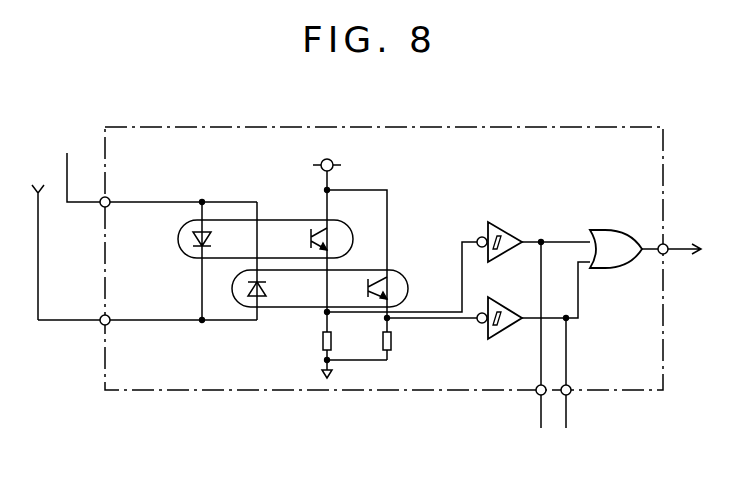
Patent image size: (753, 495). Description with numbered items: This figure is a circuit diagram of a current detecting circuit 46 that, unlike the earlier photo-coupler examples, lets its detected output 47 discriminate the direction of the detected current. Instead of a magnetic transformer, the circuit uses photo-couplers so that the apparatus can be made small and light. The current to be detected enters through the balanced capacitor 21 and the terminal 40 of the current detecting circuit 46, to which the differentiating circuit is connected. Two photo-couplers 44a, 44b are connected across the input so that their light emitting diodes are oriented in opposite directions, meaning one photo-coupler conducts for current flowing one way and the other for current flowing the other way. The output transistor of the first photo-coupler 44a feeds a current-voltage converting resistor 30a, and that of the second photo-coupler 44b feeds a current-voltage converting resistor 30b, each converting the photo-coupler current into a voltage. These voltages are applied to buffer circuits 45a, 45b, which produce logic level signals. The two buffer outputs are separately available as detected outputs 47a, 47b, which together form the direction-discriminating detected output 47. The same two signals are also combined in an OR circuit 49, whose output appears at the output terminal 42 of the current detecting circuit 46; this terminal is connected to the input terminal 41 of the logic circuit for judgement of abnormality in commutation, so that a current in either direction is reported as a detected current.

The balanced capacitor 21 is at (32, 241).
The terminal of the current detecting circuit 40 is at (103, 207).
The photo-coupler 44a is at (283, 218).
The photo-coupler 44b is at (285, 308).
The current-voltage converting resistor 30a is at (320, 342).
The current-voltage converting resistor 30b is at (393, 342).
The buffer circuit 45a is at (509, 226).
The buffer circuit 45b is at (510, 299).
The OR circuit 49 is at (620, 232).
The output terminal of the current detecting circuit 42 is at (671, 244).
The input terminal of the logic circuit for judgement of abnormality in commutation 41 is at (706, 253).
The detected output 47 is at (550, 426).
The detected output 47a is at (536, 396).
The detected output 47b is at (570, 395).
The current detecting circuit 46 is at (215, 391).